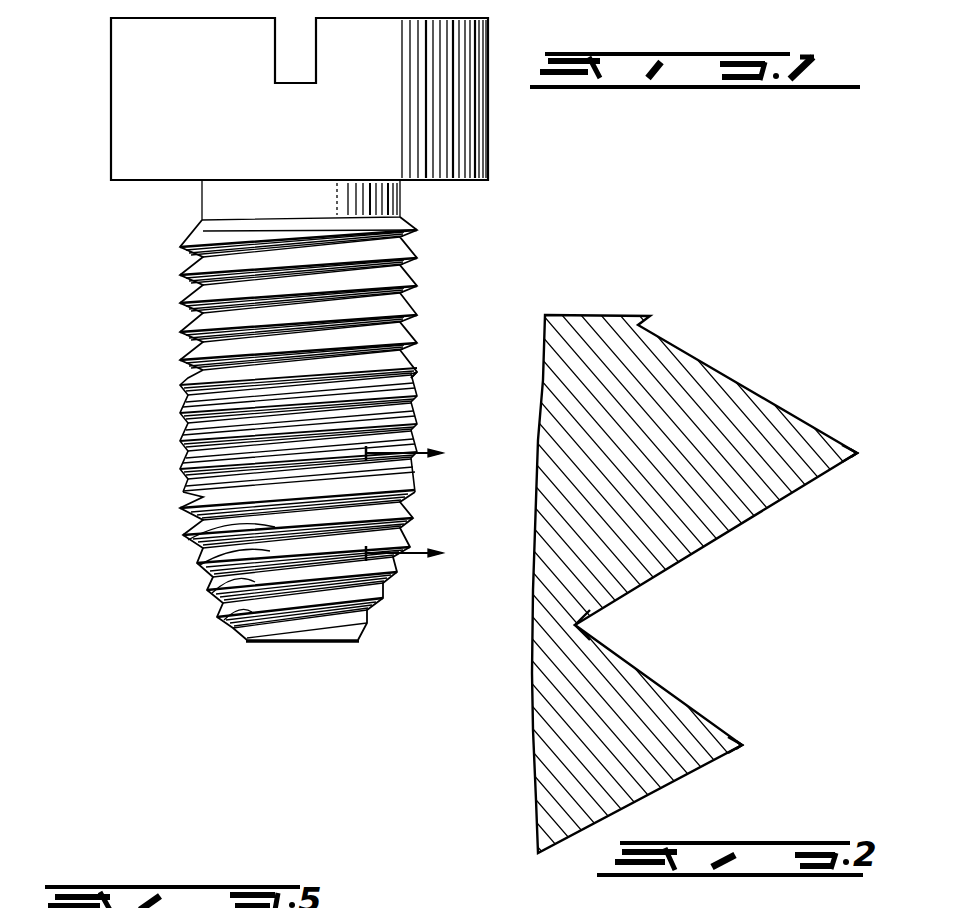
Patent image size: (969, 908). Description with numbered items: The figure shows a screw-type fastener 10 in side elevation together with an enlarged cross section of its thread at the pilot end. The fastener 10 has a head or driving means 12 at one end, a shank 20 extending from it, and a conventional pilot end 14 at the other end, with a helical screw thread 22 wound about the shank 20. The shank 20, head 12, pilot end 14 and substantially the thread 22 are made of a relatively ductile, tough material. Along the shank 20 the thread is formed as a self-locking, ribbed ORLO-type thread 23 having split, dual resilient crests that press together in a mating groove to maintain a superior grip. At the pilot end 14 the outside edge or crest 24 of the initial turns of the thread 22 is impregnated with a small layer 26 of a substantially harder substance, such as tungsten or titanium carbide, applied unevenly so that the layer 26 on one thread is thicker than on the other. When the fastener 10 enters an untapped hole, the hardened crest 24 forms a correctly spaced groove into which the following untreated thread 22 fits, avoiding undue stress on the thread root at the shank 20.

In FIG. 1, the screw-type fastener 10 is at (281, 329).
In FIG. 1, the head or driving means 12 is at (112, 117).
In FIG. 1, the pilot end 14 is at (473, 453).
In FIG. 1, the shank 20 is at (205, 208).
In FIG. 2, the shank 20 is at (562, 625).
In FIG. 1, the helical screw thread 22 is at (420, 258).
In FIG. 2, the helical screw thread 22 is at (728, 535).
In FIG. 1, the self-locking ribbed screw thread 23 is at (416, 377).
In FIG. 2, the crest 24 is at (836, 462).
In FIG. 1, the layer of hard substance 26 is at (207, 590).
In FIG. 2, the layer of hard substance 26 is at (845, 450).